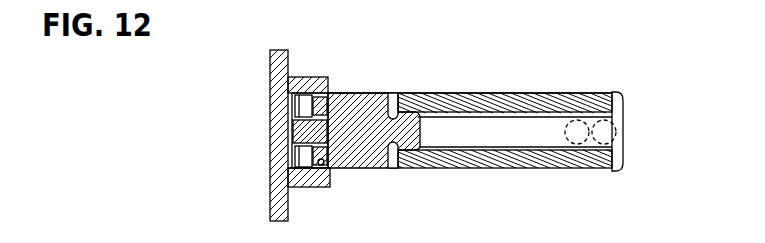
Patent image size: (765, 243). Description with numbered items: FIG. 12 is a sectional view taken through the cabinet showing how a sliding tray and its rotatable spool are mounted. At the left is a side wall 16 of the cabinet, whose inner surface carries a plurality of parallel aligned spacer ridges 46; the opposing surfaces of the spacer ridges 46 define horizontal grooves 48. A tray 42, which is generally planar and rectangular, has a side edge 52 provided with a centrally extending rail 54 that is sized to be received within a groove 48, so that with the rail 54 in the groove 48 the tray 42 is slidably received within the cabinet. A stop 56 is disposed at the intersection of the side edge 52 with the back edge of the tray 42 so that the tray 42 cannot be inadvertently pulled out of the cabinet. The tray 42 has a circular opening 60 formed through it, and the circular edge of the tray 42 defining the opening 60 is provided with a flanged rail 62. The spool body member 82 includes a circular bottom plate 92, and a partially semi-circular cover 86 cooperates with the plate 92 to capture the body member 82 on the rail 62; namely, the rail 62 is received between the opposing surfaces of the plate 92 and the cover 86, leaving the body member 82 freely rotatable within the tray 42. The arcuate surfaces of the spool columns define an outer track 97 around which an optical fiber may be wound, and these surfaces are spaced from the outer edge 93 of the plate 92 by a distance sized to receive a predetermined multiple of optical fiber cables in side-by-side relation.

The side wall 16 is at (271, 68).
The spacer ridges 46 is at (297, 78).
The tray 42 is at (355, 85).
The side edge 52 is at (326, 177).
The outer edge 93 is at (387, 170).
The stops 56 is at (291, 95).
The rail 54 is at (291, 120).
The grooves 48 is at (291, 150).
The circular opening 60 is at (405, 100).
The partially semi-circular cover 86 is at (580, 86).
The flanged rail 62 is at (425, 152).
The circular bottom plate 92 is at (538, 171).
The outer track 97 is at (504, 139).
The body member 82 is at (583, 180).